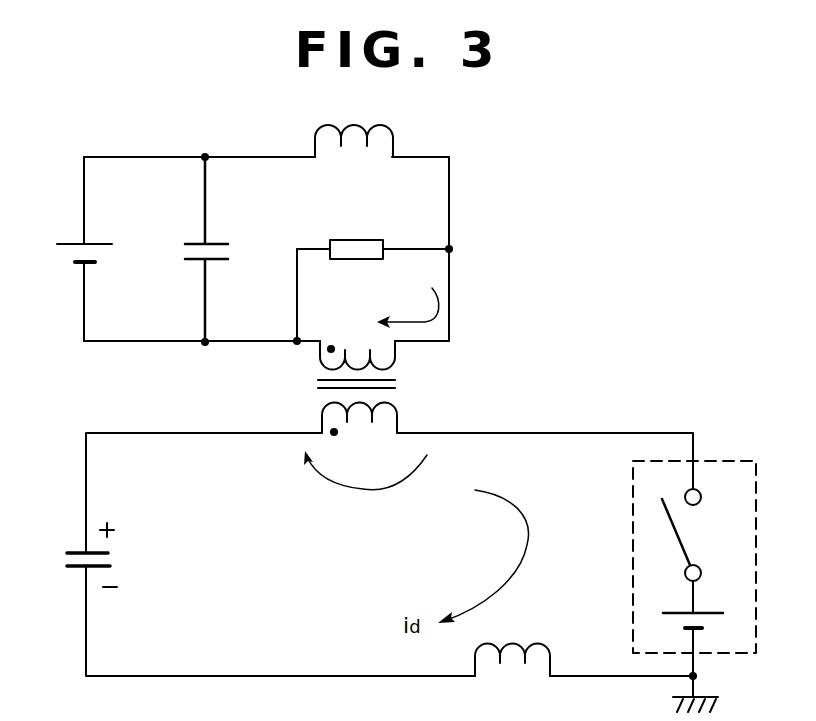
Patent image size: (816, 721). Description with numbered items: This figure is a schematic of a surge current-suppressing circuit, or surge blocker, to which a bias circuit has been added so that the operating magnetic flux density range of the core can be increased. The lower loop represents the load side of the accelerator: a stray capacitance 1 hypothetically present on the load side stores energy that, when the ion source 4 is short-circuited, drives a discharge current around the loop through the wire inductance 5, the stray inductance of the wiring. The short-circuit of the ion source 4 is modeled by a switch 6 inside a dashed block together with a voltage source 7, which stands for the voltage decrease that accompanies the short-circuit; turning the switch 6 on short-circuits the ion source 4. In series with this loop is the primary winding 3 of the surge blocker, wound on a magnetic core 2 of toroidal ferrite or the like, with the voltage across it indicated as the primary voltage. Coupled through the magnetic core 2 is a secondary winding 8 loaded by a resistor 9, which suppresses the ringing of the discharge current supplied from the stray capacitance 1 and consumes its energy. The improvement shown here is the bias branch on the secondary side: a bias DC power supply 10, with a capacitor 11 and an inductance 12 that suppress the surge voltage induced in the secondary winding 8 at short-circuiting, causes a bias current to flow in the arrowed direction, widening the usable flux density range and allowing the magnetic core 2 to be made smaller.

The stray capacitance 1 is at (105, 555).
The magnetic core 2 is at (341, 385).
The primary winding 3 is at (365, 466).
The ion source 4 is at (633, 530).
The wire inductance 5 is at (512, 640).
The switch 6 is at (697, 548).
The voltage source 7 is at (701, 644).
The secondary winding 8 is at (379, 325).
The resistor 9 is at (373, 232).
The bias DC power supply 10 is at (62, 249).
The capacitor 11 is at (187, 249).
The inductance 12 is at (330, 134).